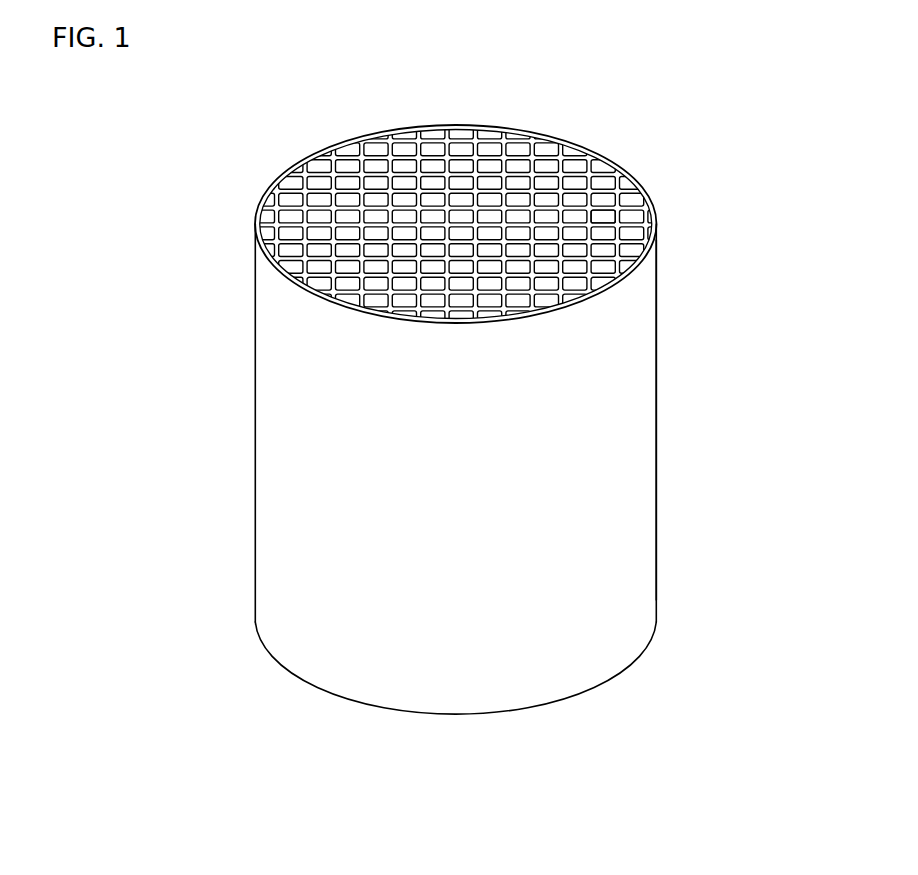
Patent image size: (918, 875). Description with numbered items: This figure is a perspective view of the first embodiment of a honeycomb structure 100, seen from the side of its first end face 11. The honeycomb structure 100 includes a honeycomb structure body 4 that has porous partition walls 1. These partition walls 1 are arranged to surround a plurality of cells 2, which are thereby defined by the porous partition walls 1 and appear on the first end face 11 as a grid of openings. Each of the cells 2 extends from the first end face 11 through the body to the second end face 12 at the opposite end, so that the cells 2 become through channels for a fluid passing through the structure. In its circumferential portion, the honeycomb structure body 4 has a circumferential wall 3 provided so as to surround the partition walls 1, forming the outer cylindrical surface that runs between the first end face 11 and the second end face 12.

The honeycomb structure 100 is at (746, 72).
The partition walls 1 is at (562, 188).
The cells 2 is at (605, 215).
The circumferential wall 3 is at (625, 360).
The honeycomb structure body 4 is at (662, 268).
The first end face 11 is at (332, 143).
The second end face 12 is at (282, 682).